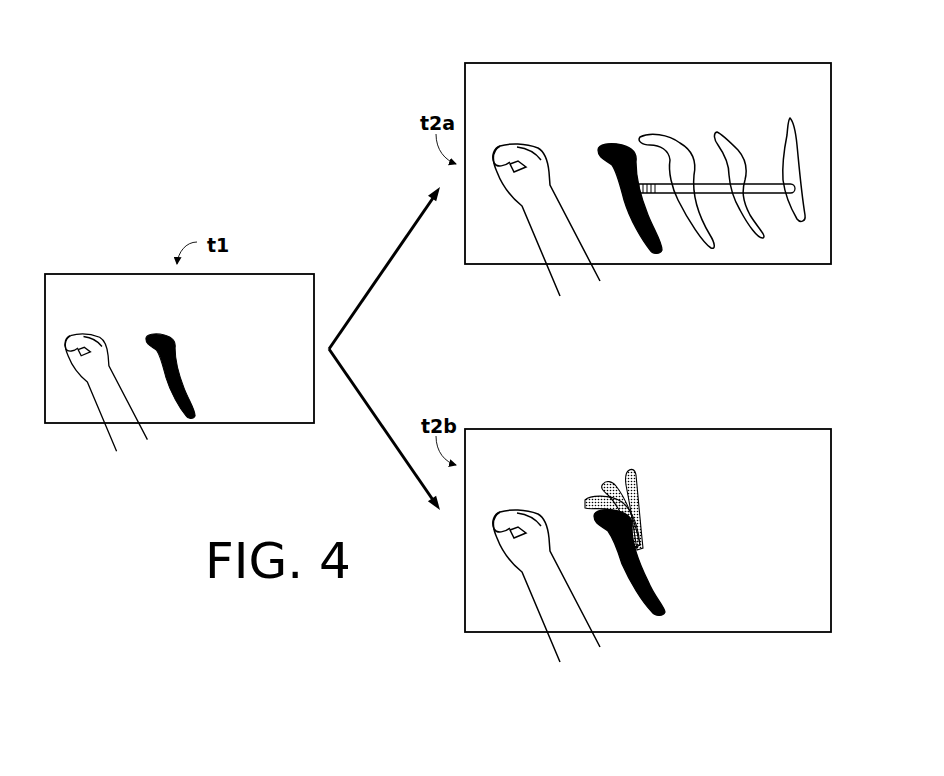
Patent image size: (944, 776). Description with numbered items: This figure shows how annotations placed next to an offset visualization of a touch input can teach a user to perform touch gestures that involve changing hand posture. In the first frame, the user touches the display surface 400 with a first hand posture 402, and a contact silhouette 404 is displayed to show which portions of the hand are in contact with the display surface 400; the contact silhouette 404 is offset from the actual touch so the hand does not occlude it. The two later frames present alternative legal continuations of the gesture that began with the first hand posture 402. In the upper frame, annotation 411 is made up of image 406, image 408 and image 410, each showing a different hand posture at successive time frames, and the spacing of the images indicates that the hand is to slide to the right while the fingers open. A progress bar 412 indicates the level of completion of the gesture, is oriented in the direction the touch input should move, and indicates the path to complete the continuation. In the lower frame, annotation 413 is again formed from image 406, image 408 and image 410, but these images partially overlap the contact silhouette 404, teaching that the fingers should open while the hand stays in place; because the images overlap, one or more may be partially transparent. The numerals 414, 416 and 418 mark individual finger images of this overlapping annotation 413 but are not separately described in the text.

The display surface 400 is at (82, 300).
The first hand posture 402 is at (94, 337).
The contact silhouette 404 is at (173, 348).
The image 406 is at (667, 135).
The image 408 is at (733, 141).
The image 410 is at (792, 121).
The annotation 411 is at (731, 125).
The progress bar 412 is at (664, 198).
The annotation 413 is at (653, 468).
The first extension segment 414 is at (585, 499).
The second extension segment 416 is at (619, 470).
The third extension segment 418 is at (638, 490).